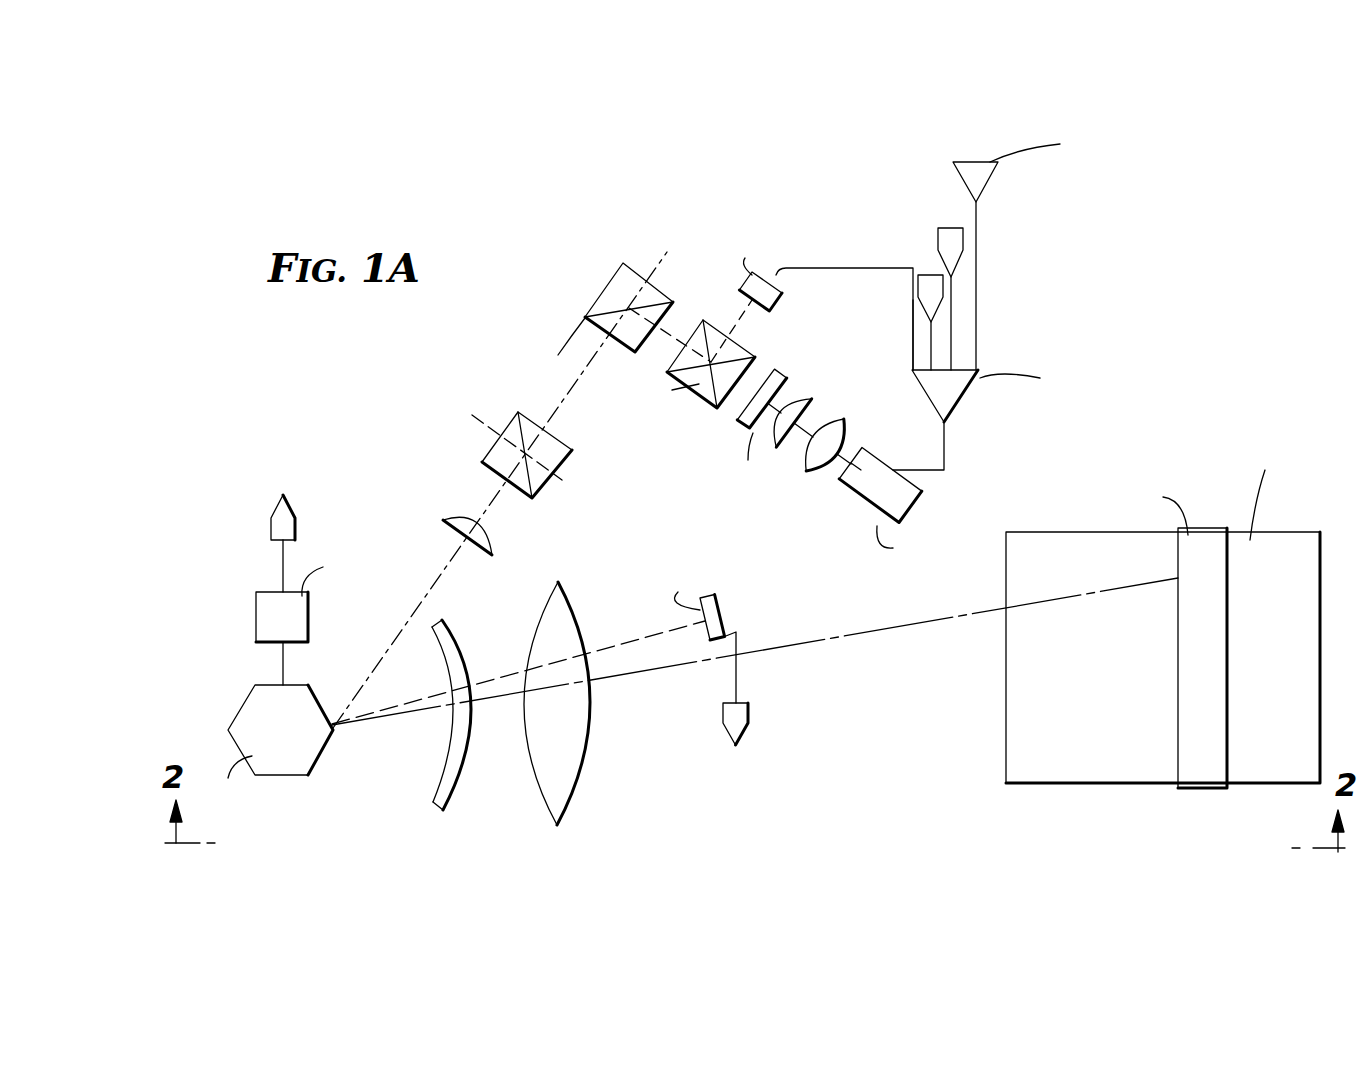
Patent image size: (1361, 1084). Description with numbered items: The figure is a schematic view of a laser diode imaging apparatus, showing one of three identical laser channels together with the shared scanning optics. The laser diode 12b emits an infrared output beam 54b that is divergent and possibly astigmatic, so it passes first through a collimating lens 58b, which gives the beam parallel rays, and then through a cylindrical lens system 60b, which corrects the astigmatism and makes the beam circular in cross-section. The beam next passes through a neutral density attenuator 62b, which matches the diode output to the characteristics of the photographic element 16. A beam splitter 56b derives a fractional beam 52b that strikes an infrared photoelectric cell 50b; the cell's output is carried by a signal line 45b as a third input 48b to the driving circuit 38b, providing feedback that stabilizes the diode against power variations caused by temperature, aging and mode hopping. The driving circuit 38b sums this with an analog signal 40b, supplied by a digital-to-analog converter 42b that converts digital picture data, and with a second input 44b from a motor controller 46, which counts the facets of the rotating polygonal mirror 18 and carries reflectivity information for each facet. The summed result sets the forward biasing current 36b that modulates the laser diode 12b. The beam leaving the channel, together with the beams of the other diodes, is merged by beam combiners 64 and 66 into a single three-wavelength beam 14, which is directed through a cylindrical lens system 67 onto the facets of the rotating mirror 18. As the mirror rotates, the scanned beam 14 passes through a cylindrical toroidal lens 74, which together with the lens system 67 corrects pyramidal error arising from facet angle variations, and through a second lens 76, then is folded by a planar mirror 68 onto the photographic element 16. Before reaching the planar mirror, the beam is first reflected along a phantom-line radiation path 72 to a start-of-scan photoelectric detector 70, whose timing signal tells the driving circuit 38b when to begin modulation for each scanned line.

The laser diode 12b is at (925, 496).
The single beam 14 is at (451, 558).
The photographic element 16 is at (1280, 540).
The rotating polygonal mirror 18 is at (320, 765).
The forward biasing current 36b is at (946, 436).
The driving circuit 38b is at (966, 388).
The analog signal 40b is at (976, 288).
The digital-to-analog converter 42b is at (993, 168).
The second input 44b is at (938, 262).
The photo cell signal line 45b is at (913, 353).
The motor controller 46 is at (308, 620).
The third input 48b is at (918, 316).
The infrared photoelectric cell 50b is at (783, 297).
The fractional beam 52b is at (740, 330).
The output beam 54b is at (860, 452).
The beam splitter 56b is at (716, 409).
The collimating lens 58b is at (842, 418).
The cylindrical lens system 60b is at (825, 392).
The neutral density attenuator 62b is at (780, 375).
The beam combiner 64 is at (673, 302).
The beam combiner 66 is at (552, 476).
The cylindrical lens system 67 is at (493, 546).
The planar mirror 68 is at (1203, 535).
The start-of-scan photoelectric detector 70 is at (726, 612).
The radiation path 72 is at (642, 638).
The cylindrical toroidal lens 74 is at (459, 788).
The lens 76 is at (584, 775).